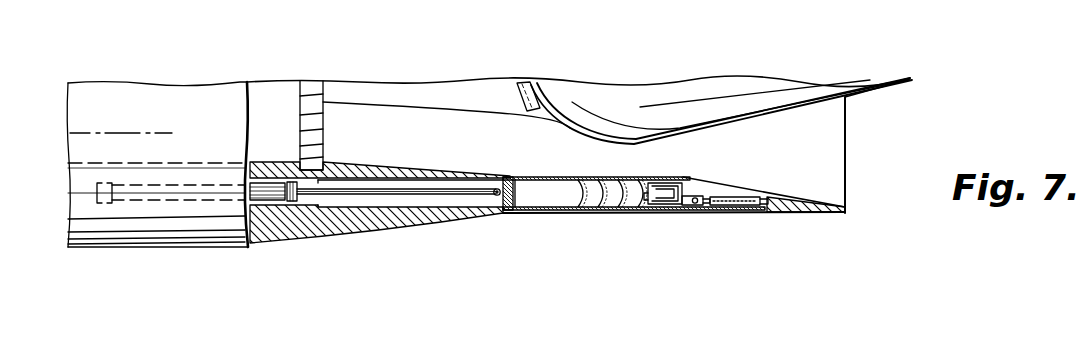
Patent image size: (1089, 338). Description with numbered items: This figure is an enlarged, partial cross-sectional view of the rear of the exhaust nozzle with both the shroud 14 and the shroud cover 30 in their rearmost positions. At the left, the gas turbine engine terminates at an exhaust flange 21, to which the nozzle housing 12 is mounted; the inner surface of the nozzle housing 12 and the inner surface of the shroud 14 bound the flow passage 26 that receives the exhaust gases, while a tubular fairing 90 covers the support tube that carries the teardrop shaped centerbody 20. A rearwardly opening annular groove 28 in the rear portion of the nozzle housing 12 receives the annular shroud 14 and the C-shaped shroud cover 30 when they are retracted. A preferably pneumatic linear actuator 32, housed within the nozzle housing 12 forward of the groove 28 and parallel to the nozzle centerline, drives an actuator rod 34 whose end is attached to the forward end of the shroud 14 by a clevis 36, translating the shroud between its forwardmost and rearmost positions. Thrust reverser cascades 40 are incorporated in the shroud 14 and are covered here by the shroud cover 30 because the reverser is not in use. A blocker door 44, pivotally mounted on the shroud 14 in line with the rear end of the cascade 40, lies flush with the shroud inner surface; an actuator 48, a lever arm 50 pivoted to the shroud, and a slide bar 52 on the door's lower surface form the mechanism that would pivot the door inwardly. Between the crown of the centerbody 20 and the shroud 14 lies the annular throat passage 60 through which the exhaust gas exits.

The nozzle housing 12 is at (377, 167).
The shroud 14 is at (786, 212).
The centerbody 20 is at (813, 110).
The exhaust flange 21 is at (309, 93).
The flow passage 26 is at (347, 127).
The annular groove 28 is at (410, 200).
The shroud cover 30 is at (520, 178).
The linear actuator 32 is at (265, 190).
The actuator rod 34 is at (355, 195).
The clevis 36 is at (497, 196).
The thrust reverser cascade 40 is at (612, 198).
The thrust reverser blocker door 44 is at (647, 198).
The actuator 48 is at (743, 204).
The lever arm 50 is at (690, 192).
The slide bar 52 is at (681, 203).
The throat passage 60 is at (636, 161).
The fairing 90 is at (405, 80).